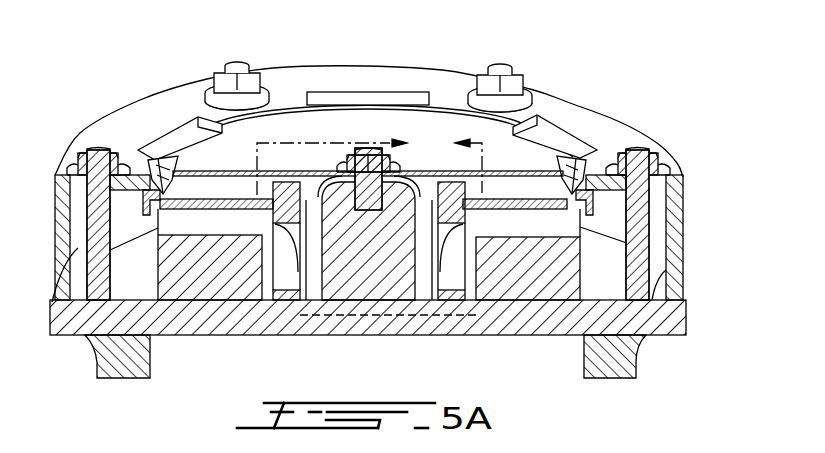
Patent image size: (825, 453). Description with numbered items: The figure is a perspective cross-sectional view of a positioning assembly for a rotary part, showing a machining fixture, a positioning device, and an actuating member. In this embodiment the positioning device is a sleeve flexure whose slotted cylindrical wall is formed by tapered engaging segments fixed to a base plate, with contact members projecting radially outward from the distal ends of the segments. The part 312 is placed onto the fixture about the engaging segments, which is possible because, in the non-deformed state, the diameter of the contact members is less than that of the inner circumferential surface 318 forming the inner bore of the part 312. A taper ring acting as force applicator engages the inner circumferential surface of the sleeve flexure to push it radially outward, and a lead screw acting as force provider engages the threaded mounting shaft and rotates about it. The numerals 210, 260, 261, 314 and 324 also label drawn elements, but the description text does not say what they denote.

The sensor assembly 210 is at (419, 204).
The cover 260 is at (590, 120).
The cover rib 261 is at (225, 157).
The part 312 is at (578, 207).
The diaphragm plate 314 is at (193, 190).
The inner circumferential surface 318 is at (308, 213).
The base plate 324 is at (479, 322).